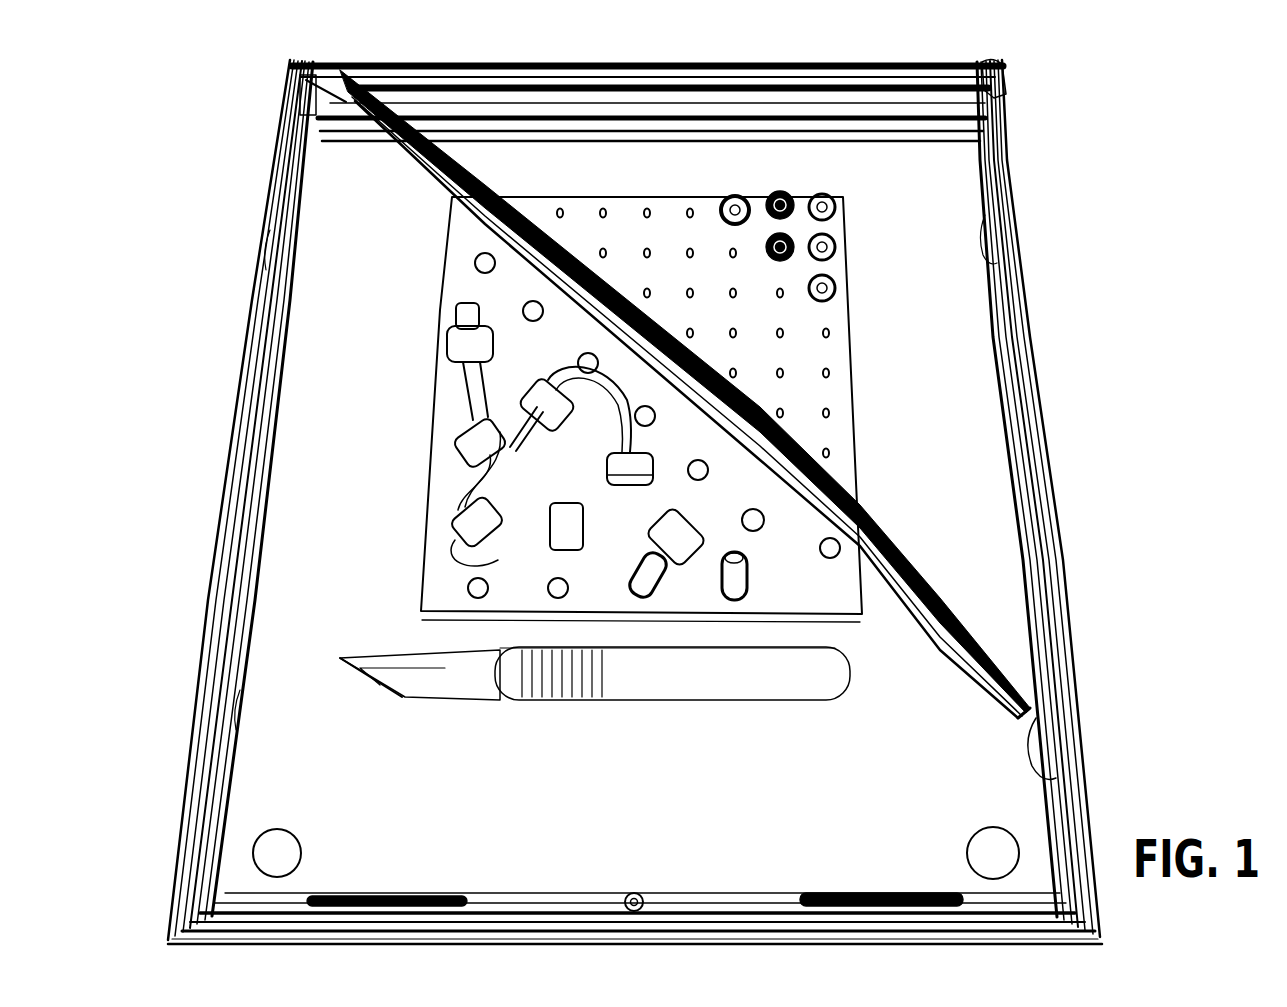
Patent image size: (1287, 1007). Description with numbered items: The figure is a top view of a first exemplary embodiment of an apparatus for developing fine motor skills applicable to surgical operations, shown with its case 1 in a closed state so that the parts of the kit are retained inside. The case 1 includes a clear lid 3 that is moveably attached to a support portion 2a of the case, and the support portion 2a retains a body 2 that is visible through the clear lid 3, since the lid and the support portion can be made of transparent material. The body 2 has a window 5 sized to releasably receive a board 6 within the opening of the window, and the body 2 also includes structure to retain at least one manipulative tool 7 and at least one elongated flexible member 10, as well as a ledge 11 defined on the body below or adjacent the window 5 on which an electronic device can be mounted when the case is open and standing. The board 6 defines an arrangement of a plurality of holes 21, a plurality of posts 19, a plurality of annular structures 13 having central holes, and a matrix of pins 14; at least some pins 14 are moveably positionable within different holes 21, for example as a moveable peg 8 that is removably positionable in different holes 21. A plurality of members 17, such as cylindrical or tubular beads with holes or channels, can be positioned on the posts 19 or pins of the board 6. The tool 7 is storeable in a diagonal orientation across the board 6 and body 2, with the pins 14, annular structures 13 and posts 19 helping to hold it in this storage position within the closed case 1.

The case 1 is at (233, 447).
The body 2 is at (316, 566).
The support portion 2a is at (1078, 933).
The clear lid 3 is at (290, 84).
The window 5 is at (432, 370).
The board 6 is at (468, 292).
The manipulative tool 7 is at (976, 626).
The moveable peg 8 is at (742, 585).
The elongated flexible member 10 is at (457, 567).
The ledge 11 is at (482, 678).
The annular structure 13 is at (437, 535).
The pin 14 is at (829, 334).
The member 17 is at (840, 247).
The post 19 is at (834, 548).
The hole 21 is at (757, 518).